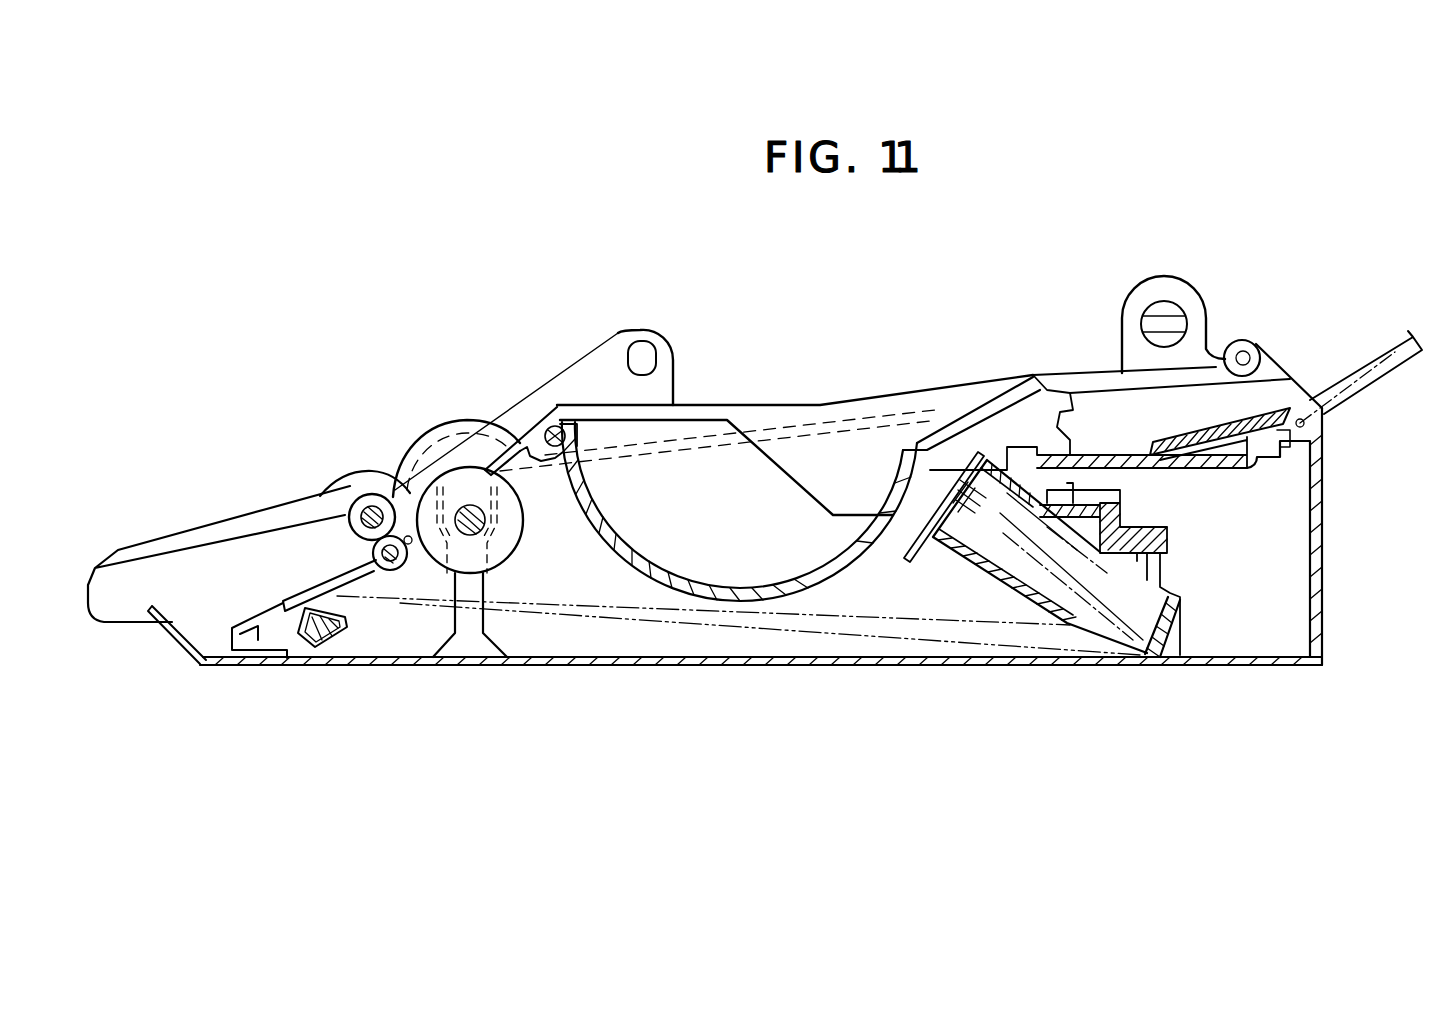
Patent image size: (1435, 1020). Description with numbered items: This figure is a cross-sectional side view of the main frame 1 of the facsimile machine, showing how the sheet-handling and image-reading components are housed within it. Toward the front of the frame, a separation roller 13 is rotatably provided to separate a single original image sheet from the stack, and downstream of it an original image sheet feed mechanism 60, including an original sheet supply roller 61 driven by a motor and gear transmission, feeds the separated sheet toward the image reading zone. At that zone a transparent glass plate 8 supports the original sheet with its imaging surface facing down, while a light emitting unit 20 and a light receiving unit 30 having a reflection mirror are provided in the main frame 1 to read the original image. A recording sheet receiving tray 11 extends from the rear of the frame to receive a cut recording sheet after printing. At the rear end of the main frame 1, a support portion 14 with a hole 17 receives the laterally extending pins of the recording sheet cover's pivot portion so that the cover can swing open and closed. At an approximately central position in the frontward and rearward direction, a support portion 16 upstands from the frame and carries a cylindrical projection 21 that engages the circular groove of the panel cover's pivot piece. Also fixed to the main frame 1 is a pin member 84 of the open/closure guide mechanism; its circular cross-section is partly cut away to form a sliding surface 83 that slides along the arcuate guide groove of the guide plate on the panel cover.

The main frame 1 is at (775, 658).
The transparent glass plate 8 is at (340, 593).
The recording sheet receiving tray 11 is at (1368, 387).
The separation roller 13 is at (516, 558).
The support portion 14 is at (1248, 342).
The support portion 16 is at (677, 375).
The hole 17 is at (1248, 355).
The light emitting unit 20 is at (327, 643).
The cylindrical projection 21 is at (644, 357).
The light receiving unit 30 is at (978, 576).
The original image sheet feed mechanism 60 is at (347, 518).
The original sheet supply roller 61 is at (374, 474).
The sliding surface 83 is at (540, 413).
The pin member 84 is at (565, 423).